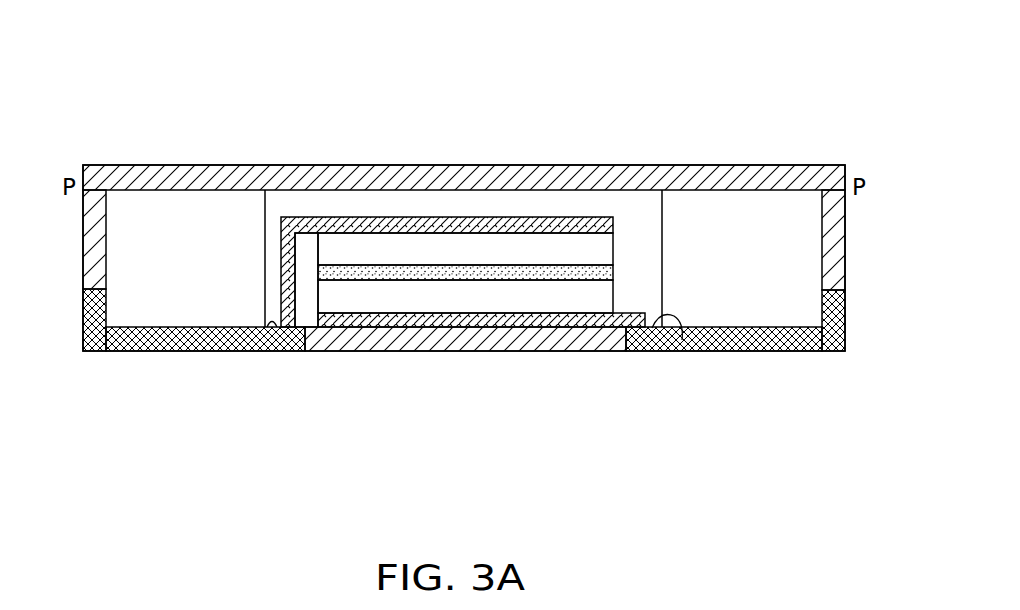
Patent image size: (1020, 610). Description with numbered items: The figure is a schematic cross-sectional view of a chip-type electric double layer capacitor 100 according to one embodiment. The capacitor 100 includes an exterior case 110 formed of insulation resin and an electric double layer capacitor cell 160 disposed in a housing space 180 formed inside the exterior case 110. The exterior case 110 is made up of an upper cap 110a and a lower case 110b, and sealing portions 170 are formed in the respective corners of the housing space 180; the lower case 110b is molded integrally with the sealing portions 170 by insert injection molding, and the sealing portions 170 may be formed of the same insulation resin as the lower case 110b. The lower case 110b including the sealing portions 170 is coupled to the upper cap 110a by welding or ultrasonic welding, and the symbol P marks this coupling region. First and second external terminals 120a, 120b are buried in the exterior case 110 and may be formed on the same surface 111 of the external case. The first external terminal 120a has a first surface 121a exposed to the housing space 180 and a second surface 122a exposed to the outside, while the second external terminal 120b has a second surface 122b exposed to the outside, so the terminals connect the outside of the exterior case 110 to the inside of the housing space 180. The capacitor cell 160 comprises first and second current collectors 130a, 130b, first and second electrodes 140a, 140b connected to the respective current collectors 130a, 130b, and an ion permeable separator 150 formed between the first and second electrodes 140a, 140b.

The chip-type electric double layer capacitor 100 is at (487, 48).
The exterior case 110 is at (860, 101).
The upper cap 110a is at (748, 178).
The lower case 110b is at (836, 205).
The surface of the external case 111 is at (533, 343).
The first external terminal 120a is at (195, 351).
The second external terminal 120b is at (748, 351).
The first surface 121a is at (271, 327).
The second surface 122a is at (108, 351).
The second surface 122b is at (810, 351).
The first current collector 130a is at (458, 222).
The second current collector 130b is at (597, 322).
The first electrode 140a is at (415, 252).
The second electrode 140b is at (340, 298).
The ion permeable separator 150 is at (482, 272).
The electric double layer capacitor cell 160 is at (560, 213).
The sealing portion 170 is at (186, 225).
The housing space 180 is at (632, 226).